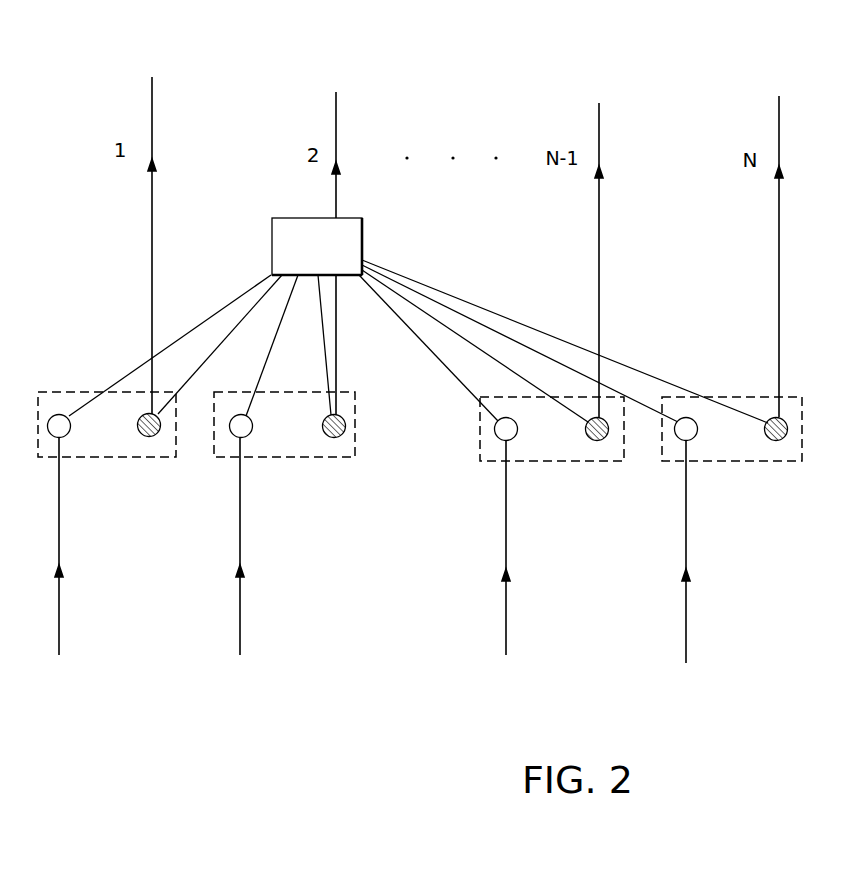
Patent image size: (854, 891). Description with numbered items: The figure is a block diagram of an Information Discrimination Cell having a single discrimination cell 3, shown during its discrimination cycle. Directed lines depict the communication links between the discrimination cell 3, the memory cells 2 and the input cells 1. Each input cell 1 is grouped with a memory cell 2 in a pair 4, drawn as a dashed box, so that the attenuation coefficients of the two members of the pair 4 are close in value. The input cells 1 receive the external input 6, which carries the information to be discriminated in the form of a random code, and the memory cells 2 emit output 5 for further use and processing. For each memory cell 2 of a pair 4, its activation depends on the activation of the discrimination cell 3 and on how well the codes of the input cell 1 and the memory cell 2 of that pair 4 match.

The input cell 1 is at (68, 433).
The memory cell 2 is at (160, 430).
The discrimination cell 3 is at (324, 257).
The pair 4 is at (103, 435).
The output 5 is at (779, 128).
The external input 6 is at (59, 628).